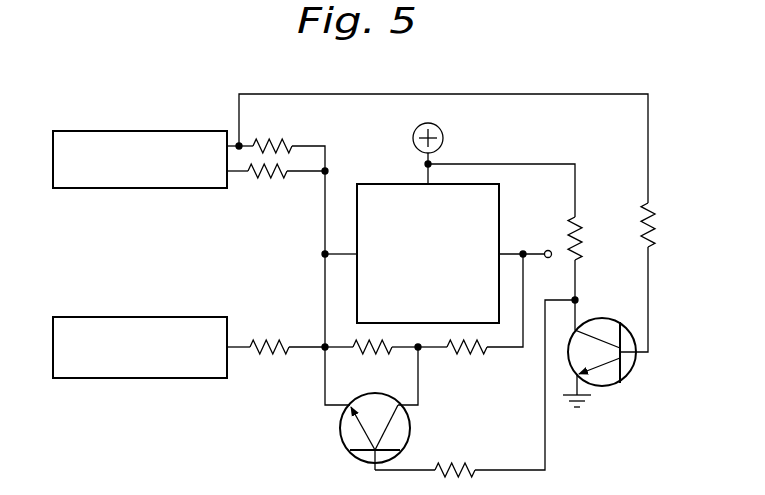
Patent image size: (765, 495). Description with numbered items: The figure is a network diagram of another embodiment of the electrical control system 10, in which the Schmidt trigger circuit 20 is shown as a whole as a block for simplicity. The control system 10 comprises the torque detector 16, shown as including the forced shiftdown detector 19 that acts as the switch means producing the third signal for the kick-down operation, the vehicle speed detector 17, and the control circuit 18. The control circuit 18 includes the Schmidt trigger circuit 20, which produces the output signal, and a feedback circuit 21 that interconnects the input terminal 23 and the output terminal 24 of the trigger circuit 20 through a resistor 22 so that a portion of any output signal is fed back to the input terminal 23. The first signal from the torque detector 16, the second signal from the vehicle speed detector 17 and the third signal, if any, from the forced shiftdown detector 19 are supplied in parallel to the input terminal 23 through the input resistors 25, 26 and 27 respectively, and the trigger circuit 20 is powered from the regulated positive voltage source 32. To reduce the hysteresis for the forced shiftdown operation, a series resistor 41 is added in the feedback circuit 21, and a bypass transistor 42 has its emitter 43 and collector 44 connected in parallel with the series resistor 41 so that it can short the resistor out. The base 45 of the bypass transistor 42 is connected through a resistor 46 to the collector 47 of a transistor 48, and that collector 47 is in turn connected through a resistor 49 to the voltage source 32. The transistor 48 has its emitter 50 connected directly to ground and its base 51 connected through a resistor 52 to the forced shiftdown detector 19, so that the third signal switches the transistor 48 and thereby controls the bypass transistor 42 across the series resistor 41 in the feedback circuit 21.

The electrical control system 10 is at (529, 91).
The torque detector 16 is at (140, 140).
The forced shiftdown detector 19 is at (107, 131).
The vehicle speed detector 17 is at (108, 317).
The control circuit 18 is at (570, 149).
The Schmidt trigger circuit 20 is at (393, 184).
The feedback circuit 21 is at (550, 456).
The resistor 22 is at (470, 352).
The input terminal 23 is at (326, 255).
The output terminal 24 is at (548, 250).
The input resistor 25 is at (250, 176).
The input resistor 26 is at (277, 340).
The input resistor 27 is at (288, 143).
The regulated positive voltage source 32 is at (443, 130).
The series resistor 41 is at (372, 352).
The bypass transistor 42 is at (379, 441).
The emitter 43 is at (355, 431).
The collector 44 is at (390, 425).
The base 45 is at (395, 462).
The resistor 46 is at (465, 465).
The collector 47 is at (619, 361).
The transistor 48 is at (627, 384).
The resistor 49 is at (577, 240).
The emitter 50 is at (600, 386).
The base 51 is at (630, 362).
The resistor 52 is at (642, 212).